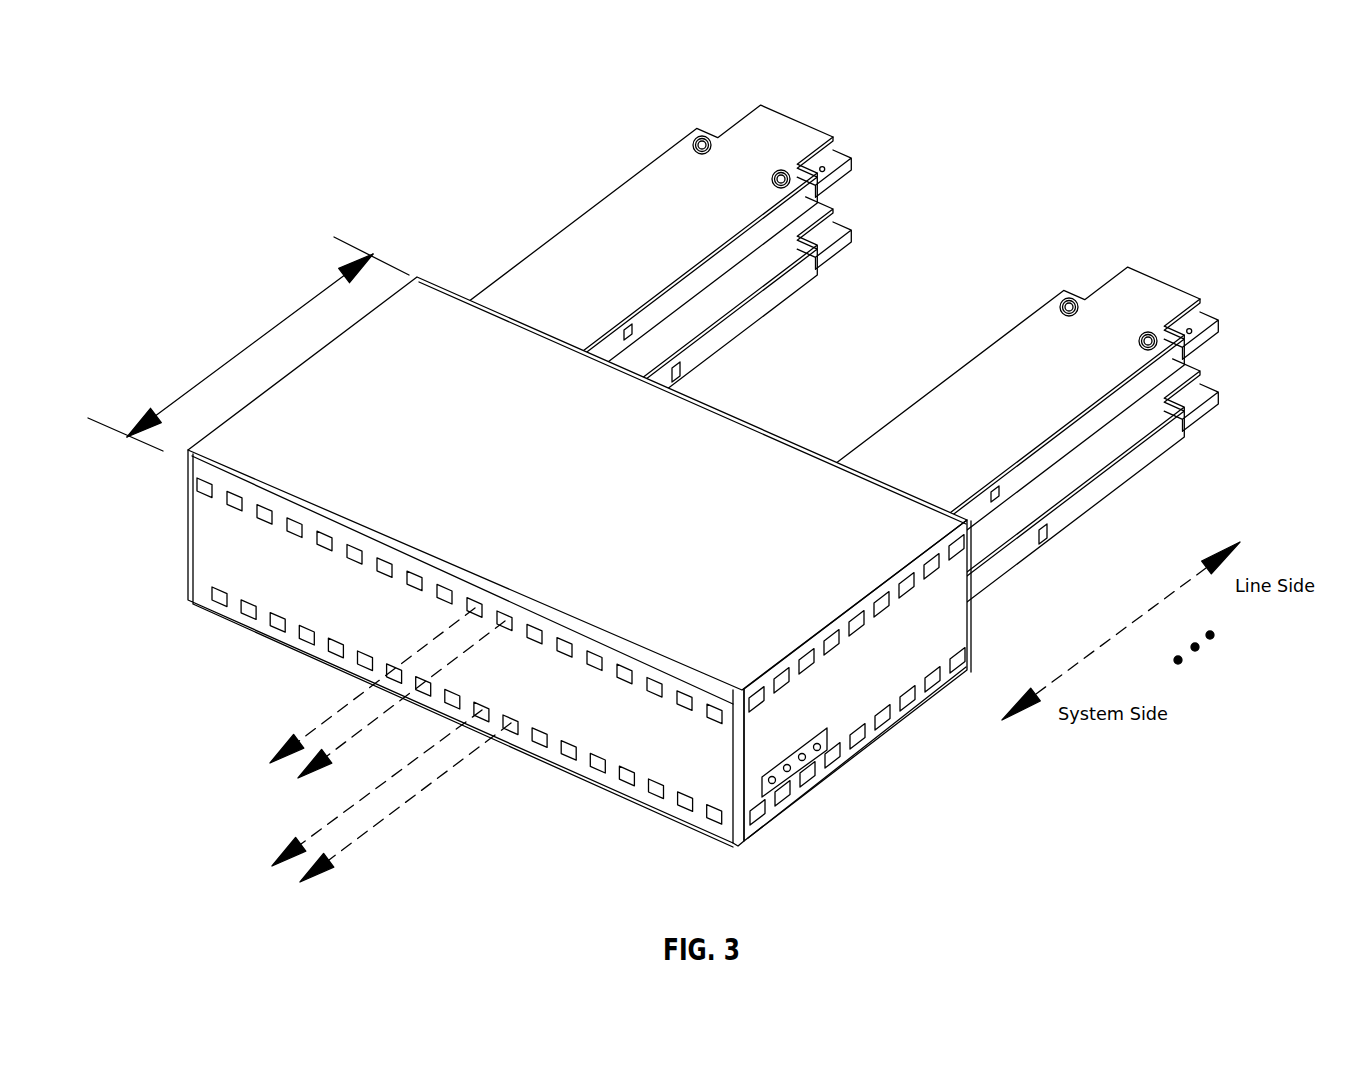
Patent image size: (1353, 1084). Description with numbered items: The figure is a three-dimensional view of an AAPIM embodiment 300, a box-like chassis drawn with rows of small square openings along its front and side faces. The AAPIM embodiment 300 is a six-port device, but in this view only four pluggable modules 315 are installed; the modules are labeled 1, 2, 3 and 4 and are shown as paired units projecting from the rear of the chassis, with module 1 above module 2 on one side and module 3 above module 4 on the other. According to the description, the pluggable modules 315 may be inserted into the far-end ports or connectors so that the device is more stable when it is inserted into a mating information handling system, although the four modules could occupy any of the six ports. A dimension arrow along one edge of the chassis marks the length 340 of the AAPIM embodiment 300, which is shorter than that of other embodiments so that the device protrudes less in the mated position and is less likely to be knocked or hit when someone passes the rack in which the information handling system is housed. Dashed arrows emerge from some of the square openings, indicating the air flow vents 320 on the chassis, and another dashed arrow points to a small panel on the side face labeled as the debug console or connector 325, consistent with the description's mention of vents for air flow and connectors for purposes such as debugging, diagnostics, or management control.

The AAPIM embodiment 300 is at (598, 498).
The pluggable modules 315 is at (792, 346).
The air flow vents 320 is at (557, 680).
The debug console / connector 325 is at (828, 781).
The length 340 is at (248, 344).
The pluggable module 1 is at (636, 261).
The pluggable module 2 is at (803, 273).
The pluggable module 3 is at (1003, 423).
The pluggable module 4 is at (1080, 505).